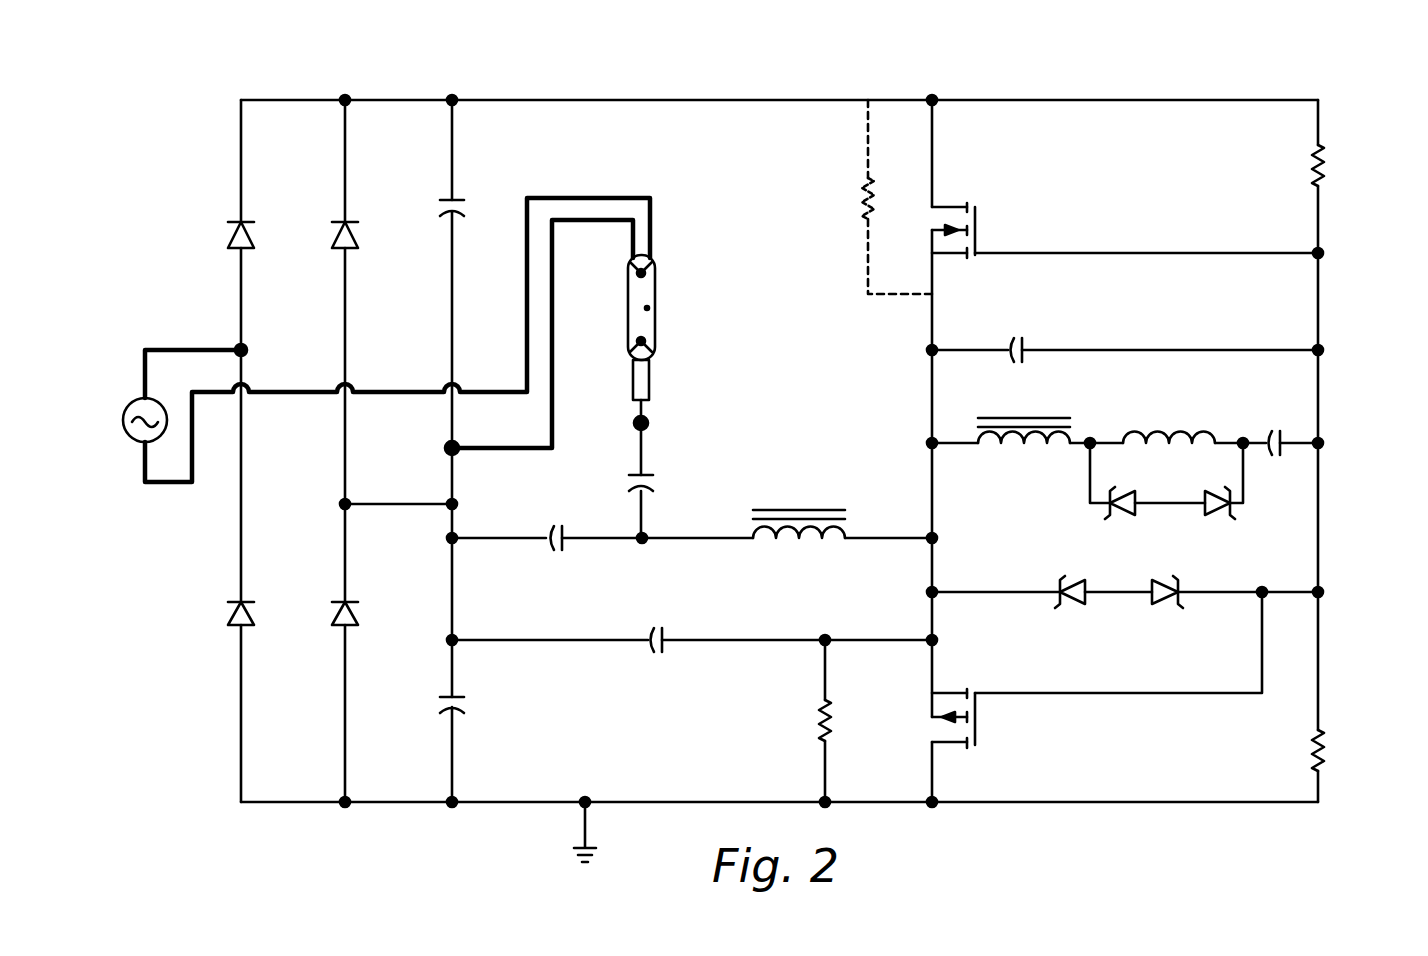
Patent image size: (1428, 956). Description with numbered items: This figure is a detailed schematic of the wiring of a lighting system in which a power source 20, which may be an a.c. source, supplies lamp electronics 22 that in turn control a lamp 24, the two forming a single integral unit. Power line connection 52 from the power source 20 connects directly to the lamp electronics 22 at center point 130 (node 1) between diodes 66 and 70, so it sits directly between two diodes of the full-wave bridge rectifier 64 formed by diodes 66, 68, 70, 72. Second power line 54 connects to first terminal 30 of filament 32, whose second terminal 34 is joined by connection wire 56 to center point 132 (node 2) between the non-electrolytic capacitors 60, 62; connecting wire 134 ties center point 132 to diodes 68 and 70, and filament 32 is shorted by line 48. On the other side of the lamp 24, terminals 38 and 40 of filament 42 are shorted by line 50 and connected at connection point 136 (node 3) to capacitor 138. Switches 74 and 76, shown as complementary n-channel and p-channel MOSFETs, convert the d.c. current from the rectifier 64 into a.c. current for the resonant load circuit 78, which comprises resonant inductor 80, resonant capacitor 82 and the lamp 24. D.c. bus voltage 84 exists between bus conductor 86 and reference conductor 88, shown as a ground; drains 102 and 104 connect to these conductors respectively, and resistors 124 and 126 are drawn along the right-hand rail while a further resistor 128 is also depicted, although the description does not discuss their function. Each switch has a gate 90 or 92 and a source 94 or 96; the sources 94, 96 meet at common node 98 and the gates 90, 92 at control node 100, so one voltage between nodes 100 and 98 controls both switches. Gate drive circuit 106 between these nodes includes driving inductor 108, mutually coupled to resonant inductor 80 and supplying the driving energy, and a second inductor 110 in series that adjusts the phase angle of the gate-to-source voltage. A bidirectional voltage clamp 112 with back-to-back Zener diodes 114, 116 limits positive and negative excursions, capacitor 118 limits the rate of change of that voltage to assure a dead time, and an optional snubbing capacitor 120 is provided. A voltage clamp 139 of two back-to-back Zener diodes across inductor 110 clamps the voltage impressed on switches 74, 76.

The node 1 is at (262, 351).
The node 2 is at (441, 448).
The node 3 is at (651, 424).
The power source 20 is at (130, 398).
The lamp electronics 22 is at (288, 82).
The lamp 24 is at (626, 306).
The first terminal of filament 30 is at (659, 268).
The filament 32 is at (651, 270).
The second terminal of filament 34 is at (632, 268).
The first terminal of filament 38 is at (624, 346).
The second terminal of filament 40 is at (667, 344).
The filament 42 is at (652, 346).
The line 48 is at (646, 256).
The line 50 is at (639, 414).
The power line connection 52 is at (152, 342).
The second power line 54 is at (169, 484).
The connection wire 56 is at (552, 300).
The non-electrolytic capacitor 60 is at (464, 208).
The non-electrolytic capacitor 62 is at (465, 710).
The full-wave bridge rectifier 64 is at (160, 236).
The diode 66 is at (250, 240).
The diode 68 is at (357, 240).
The diode 70 is at (225, 612).
The diode 72 is at (346, 612).
The switch 74 is at (974, 226).
The switch 76 is at (980, 717).
The resonant load circuit 78 is at (812, 406).
The resonant inductor 80 is at (452, 538).
The resonant capacitor 82 is at (560, 526).
The d.c. bus voltage 84 is at (1072, 98).
The bus conductor 86 is at (1227, 98).
The reference conductor 88 is at (582, 838).
The gate 90 is at (1112, 252).
The gate 92 is at (1128, 695).
The source 94 is at (932, 306).
The source 96 is at (936, 670).
The common node 98 is at (928, 442).
The control node 100 is at (1323, 442).
The drain 102 is at (932, 162).
The drain 104 is at (937, 769).
The gate drive circuit 106 is at (1338, 362).
The driving inductor 108 is at (1028, 428).
The second inductor 110 is at (1138, 436).
The bidirectional voltage clamp 112 is at (1280, 428).
The diode 114 is at (1080, 604).
The diode 116 is at (1162, 594).
The capacitor 118 is at (1025, 338).
The snubbing capacitor 120 is at (654, 626).
The resistor 124 is at (1288, 172).
The resistor 126 is at (1298, 762).
The resistor 128 is at (819, 726).
The center point 130 is at (235, 340).
The center point 132 is at (458, 452).
The connecting wire 134 is at (419, 504).
The connection point 136 is at (638, 432).
The capacitor 138 is at (654, 482).
The voltage clamp 139 is at (1258, 514).